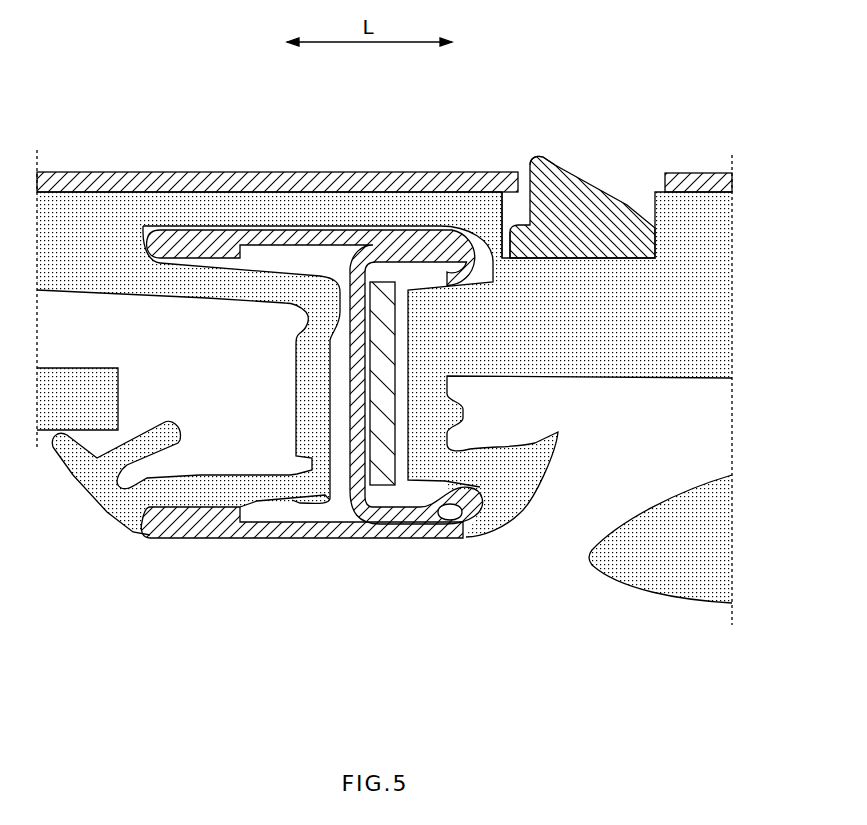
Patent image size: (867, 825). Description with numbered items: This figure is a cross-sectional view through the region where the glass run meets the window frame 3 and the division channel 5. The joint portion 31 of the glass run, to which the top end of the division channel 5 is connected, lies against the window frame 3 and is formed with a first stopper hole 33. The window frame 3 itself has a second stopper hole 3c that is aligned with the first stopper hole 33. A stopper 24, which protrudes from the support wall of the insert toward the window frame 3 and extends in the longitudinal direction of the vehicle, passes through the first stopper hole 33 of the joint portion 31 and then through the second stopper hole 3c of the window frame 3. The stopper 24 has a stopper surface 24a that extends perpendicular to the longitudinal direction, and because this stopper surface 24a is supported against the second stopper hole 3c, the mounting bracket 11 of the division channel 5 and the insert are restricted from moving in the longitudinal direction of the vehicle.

The window frame 3 is at (312, 172).
The second stopper hole 3c is at (657, 175).
The joint portion 31 is at (112, 210).
The first stopper hole 33 is at (503, 212).
The stopper 24 is at (578, 192).
The stopper surface 24a is at (523, 188).
The division channel 5 is at (297, 552).
The mounting bracket 11 is at (382, 467).